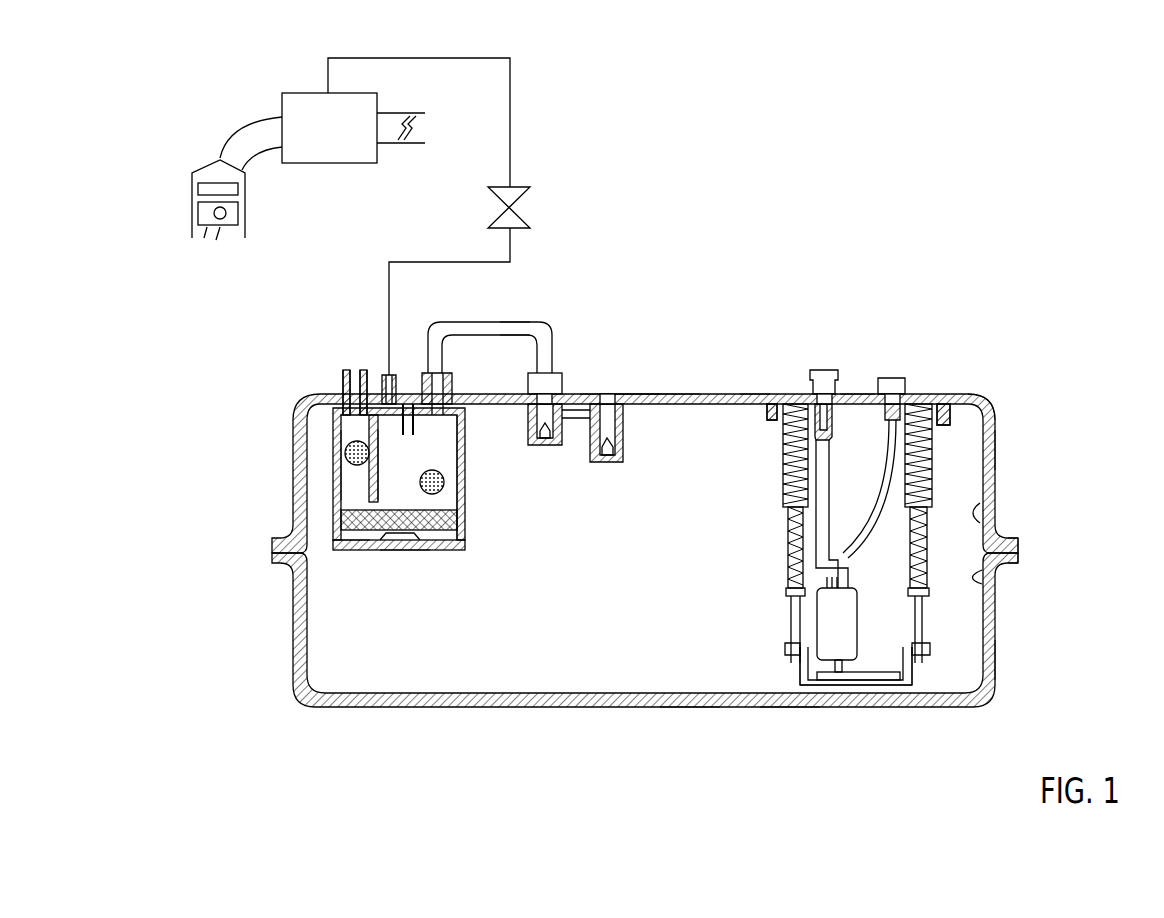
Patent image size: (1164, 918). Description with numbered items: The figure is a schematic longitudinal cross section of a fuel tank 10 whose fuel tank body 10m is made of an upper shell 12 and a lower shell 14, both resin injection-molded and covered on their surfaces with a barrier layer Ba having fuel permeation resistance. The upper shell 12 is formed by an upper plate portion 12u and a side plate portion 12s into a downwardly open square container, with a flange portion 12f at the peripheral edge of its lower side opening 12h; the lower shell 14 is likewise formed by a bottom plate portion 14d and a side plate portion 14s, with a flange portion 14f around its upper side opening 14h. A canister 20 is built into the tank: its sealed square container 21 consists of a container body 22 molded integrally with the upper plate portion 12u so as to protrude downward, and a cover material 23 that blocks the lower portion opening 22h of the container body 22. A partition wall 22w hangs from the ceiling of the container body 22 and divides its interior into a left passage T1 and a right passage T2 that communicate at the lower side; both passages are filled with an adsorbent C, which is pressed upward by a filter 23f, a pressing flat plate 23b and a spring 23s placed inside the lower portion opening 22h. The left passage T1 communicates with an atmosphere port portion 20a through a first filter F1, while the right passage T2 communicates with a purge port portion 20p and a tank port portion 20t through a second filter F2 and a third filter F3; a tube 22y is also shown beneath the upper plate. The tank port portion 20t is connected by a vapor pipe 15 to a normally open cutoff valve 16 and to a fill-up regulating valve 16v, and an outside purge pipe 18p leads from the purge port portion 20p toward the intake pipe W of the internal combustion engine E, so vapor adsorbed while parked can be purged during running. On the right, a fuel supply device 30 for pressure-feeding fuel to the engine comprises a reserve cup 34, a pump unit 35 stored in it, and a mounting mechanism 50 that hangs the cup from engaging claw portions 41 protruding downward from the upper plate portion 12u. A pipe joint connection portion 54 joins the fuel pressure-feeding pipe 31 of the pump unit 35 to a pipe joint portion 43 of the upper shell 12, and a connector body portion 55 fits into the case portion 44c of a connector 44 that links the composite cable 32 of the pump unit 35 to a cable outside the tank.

The internal combustion engine E is at (258, 120).
The intake pipe W is at (323, 145).
The outside purge pipe 18p is at (510, 248).
The fuel tank 10 is at (695, 378).
The fuel tank body 10m is at (985, 390).
The upper shell 12 is at (668, 392).
The upper plate portion 12u is at (612, 395).
The side plate portion 12s is at (996, 444).
The lower side opening 12h is at (985, 505).
The flange portion 12f is at (1020, 547).
The lower shell 14 is at (882, 712).
The flange portion 14f is at (1020, 558).
The upper side opening 14h is at (996, 595).
The side plate portion 14s is at (996, 664).
The bottom plate portion 14d is at (783, 710).
The barrier layer Ba is at (757, 392).
The canister 20 is at (348, 358).
The atmosphere port portion 20a is at (342, 367).
The purge port portion 20p is at (386, 375).
The tank port portion 20t is at (455, 388).
The container body 22 is at (333, 500).
The purge tube 22y is at (418, 395).
The partition wall 22w is at (368, 438).
The lower portion opening 22h is at (452, 507).
The square container 21 is at (465, 530).
The cover material 23 is at (432, 553).
The pressing flat plate 23b is at (375, 537).
The filter 23f is at (352, 542).
The spring 23s is at (403, 552).
The adsorbent C is at (445, 482).
The first filter F1 is at (343, 428).
The second filter F2 is at (457, 450).
The third filter F3 is at (452, 406).
The left passage T1 is at (357, 478).
The right passage T2 is at (466, 458).
The vapor pipe 15 is at (520, 330).
The cutoff valve 16 is at (543, 447).
The fill-up regulating valve 16v is at (606, 455).
The mounting mechanism 50 is at (778, 472).
The engaging claw portion 41 is at (772, 425).
The pipe joint portion 43 is at (812, 392).
The connector 44 is at (889, 375).
The case portion 44c is at (905, 394).
The pipe joint connection portion 54 is at (830, 420).
The connector body portion 55 is at (866, 395).
The fuel pressure-feeding pipe 31 is at (815, 538).
The composite cable 32 is at (877, 533).
The fuel supply device 30 is at (778, 625).
The pump unit 35 is at (872, 643).
The reserve cup 34 is at (912, 672).